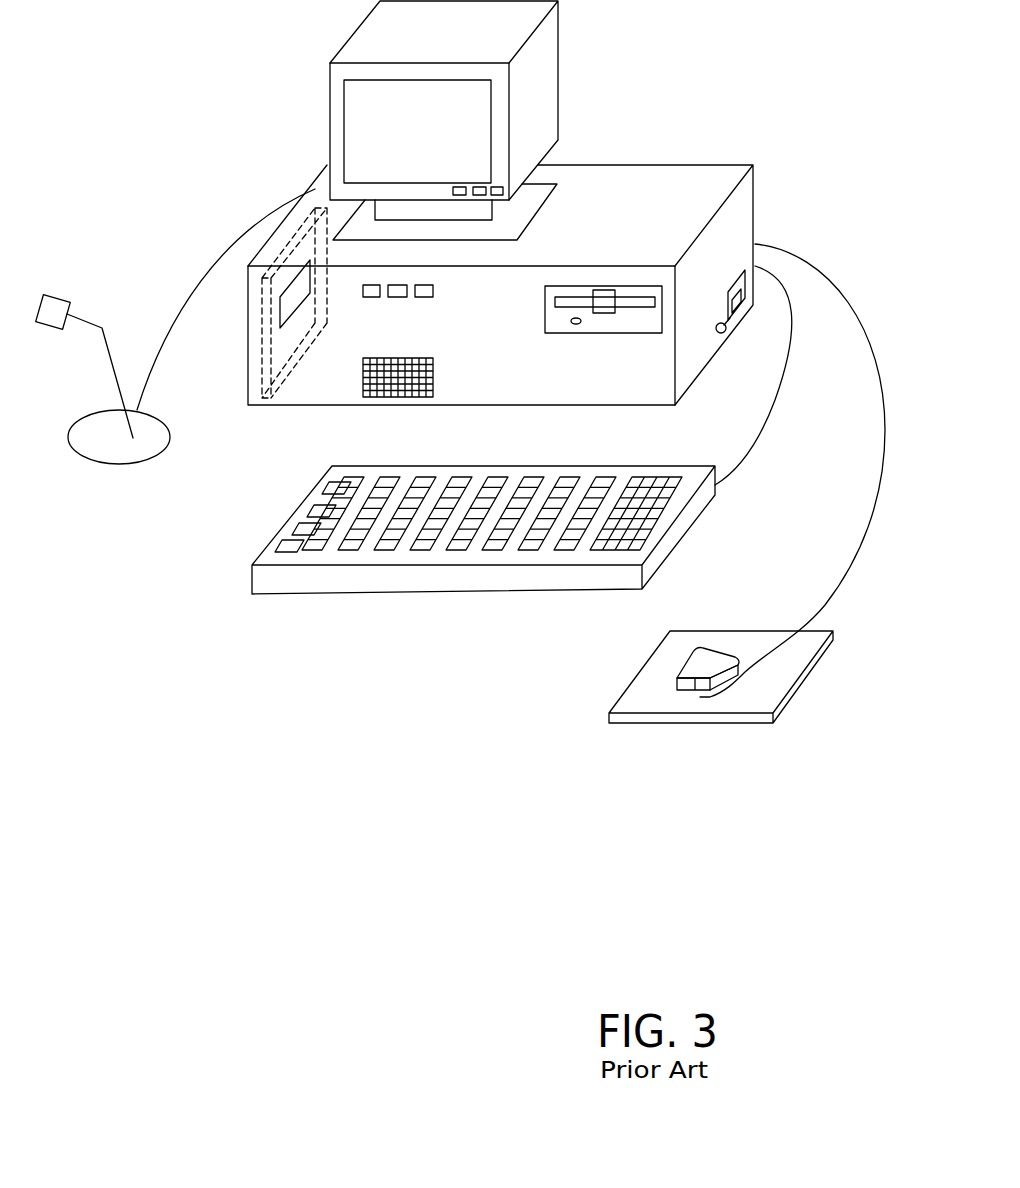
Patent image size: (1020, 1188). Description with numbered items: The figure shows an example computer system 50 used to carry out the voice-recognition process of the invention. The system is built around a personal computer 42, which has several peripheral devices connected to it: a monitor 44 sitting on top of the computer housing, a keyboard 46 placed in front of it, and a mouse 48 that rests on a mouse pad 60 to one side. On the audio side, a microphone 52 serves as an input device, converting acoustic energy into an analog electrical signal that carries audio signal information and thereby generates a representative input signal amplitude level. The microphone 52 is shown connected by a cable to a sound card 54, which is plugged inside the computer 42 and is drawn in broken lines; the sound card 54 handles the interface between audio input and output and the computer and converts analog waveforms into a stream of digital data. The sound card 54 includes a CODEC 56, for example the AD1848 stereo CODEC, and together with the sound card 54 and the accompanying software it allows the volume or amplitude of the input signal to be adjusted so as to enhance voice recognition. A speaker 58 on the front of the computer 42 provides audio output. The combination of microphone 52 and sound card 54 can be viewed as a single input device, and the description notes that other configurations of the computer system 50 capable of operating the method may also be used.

The personal computer 42 is at (652, 165).
The monitor 44 is at (558, 68).
The keyboard 46 is at (692, 528).
The mouse 48 is at (695, 672).
The computer system 50 is at (80, 728).
The microphone 52 is at (113, 465).
The sound card 54 is at (265, 413).
The CODEC 56 is at (280, 311).
The speaker 58 is at (433, 385).
The mouse pad 60 is at (797, 692).